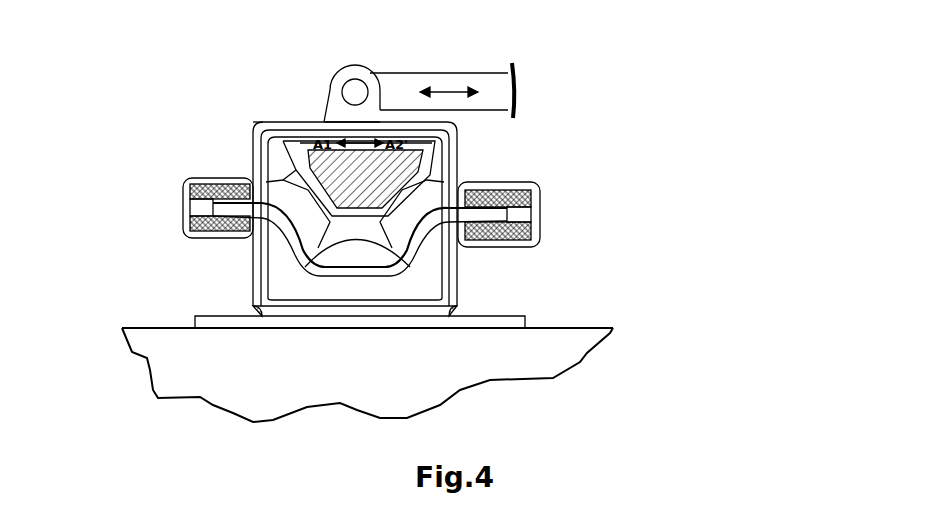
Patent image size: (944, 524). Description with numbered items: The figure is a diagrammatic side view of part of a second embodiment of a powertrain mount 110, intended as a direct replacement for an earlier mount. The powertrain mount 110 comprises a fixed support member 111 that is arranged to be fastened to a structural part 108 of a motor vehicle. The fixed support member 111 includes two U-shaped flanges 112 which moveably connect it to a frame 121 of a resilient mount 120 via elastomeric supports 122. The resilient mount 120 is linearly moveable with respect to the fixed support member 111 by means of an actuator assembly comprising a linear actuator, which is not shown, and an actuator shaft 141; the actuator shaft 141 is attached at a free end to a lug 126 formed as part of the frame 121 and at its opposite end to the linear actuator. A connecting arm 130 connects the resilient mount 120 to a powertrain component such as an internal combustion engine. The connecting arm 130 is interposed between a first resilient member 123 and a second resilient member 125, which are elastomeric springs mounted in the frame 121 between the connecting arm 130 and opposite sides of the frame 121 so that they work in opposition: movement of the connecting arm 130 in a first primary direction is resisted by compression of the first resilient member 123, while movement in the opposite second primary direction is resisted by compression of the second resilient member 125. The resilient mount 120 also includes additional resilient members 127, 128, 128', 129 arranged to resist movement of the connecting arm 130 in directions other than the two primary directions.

The structural part 108 is at (148, 373).
The powertrain mount 110 is at (247, 257).
The fixed support member 111 is at (520, 248).
The U-shaped flanges 112 is at (210, 177).
The resilient mount 120 is at (252, 127).
The frame 121 is at (262, 120).
The elastomeric supports 122 is at (207, 225).
The first resilient member 123 is at (325, 160).
The second resilient member 125 is at (432, 165).
The lug 126 is at (362, 66).
The additional resilient member 127 is at (301, 222).
The additional resilient member 128 is at (329, 324).
The additional resilient member 128' is at (342, 75).
The additional resilient member 129 is at (402, 223).
The connecting arm 130 is at (297, 160).
The actuator shaft 141 is at (487, 73).